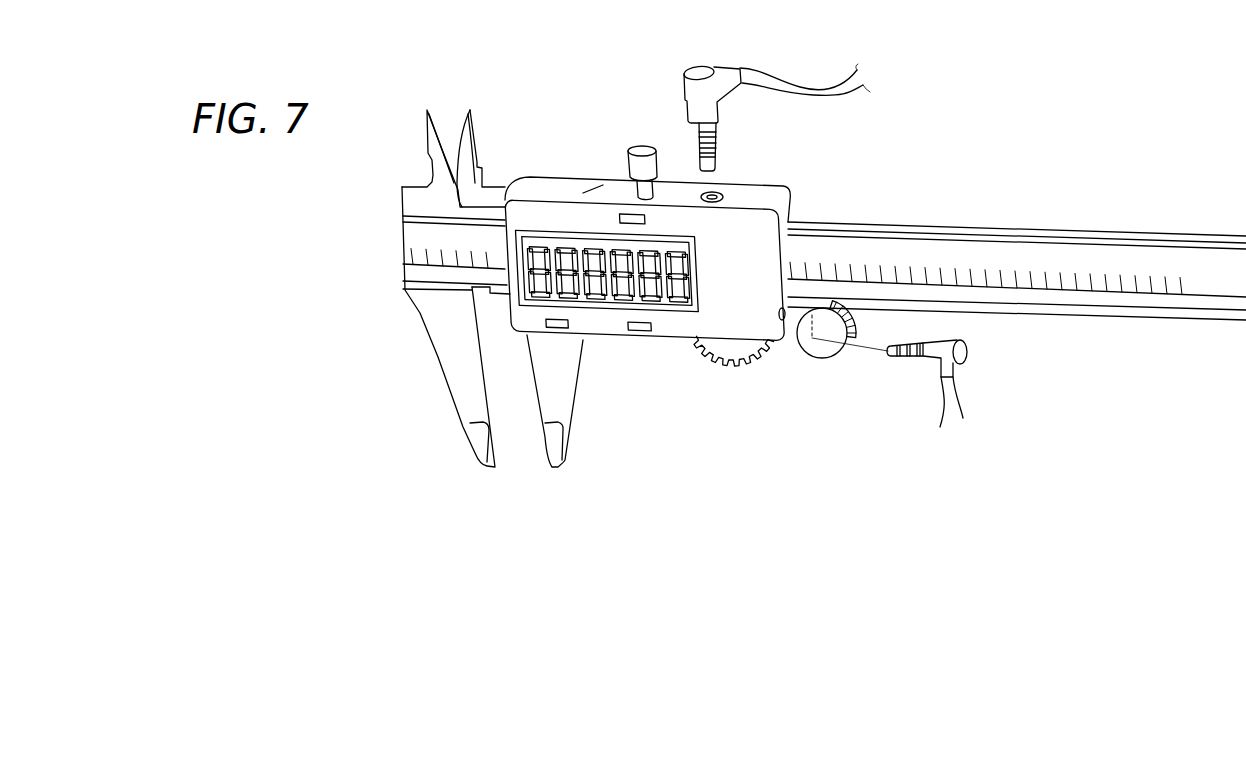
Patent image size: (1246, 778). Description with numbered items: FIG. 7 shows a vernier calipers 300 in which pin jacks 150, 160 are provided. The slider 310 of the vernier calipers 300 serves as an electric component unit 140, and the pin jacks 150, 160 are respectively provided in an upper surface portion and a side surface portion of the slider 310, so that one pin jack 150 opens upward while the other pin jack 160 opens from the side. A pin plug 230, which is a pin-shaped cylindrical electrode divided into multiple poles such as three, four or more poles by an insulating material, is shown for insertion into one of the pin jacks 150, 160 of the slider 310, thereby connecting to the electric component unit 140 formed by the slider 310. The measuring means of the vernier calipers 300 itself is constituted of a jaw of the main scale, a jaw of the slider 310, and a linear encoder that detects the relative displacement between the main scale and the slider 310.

The vernier calipers 300 is at (503, 126).
The slider 310 is at (582, 213).
The electric component unit 140 is at (603, 327).
The pin jack 150 is at (707, 188).
The pin jack 160 is at (782, 316).
The pin plug 230 is at (717, 134).